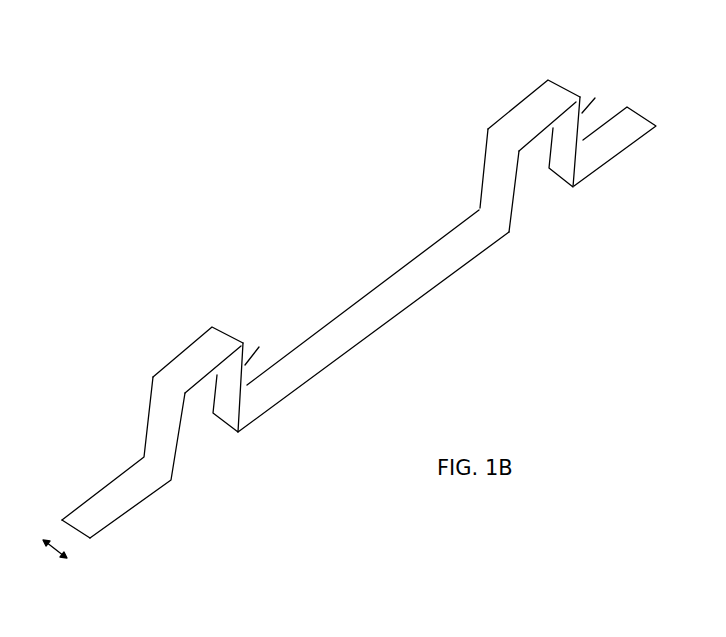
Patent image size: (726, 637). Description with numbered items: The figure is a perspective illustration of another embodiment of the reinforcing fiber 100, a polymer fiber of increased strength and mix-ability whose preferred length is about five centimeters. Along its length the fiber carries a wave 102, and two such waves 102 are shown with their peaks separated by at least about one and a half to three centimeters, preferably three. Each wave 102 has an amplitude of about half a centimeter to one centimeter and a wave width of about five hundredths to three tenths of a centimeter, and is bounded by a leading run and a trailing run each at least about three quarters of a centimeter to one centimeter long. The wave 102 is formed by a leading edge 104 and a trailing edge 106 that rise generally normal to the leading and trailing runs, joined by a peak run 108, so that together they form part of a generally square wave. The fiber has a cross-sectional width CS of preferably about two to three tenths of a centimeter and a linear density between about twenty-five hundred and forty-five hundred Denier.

The reinforcing fiber 100 is at (157, 103).
The wave 102 is at (187, 323).
The leading edge 104 is at (155, 422).
The trailing edge 106 is at (447, 247).
The peak run 108 is at (185, 363).